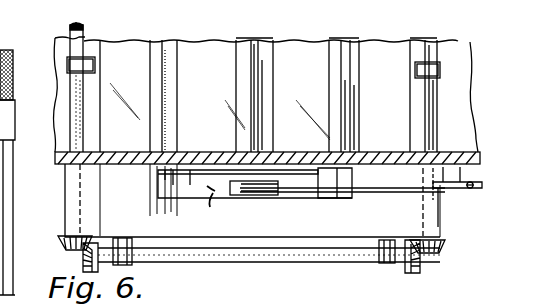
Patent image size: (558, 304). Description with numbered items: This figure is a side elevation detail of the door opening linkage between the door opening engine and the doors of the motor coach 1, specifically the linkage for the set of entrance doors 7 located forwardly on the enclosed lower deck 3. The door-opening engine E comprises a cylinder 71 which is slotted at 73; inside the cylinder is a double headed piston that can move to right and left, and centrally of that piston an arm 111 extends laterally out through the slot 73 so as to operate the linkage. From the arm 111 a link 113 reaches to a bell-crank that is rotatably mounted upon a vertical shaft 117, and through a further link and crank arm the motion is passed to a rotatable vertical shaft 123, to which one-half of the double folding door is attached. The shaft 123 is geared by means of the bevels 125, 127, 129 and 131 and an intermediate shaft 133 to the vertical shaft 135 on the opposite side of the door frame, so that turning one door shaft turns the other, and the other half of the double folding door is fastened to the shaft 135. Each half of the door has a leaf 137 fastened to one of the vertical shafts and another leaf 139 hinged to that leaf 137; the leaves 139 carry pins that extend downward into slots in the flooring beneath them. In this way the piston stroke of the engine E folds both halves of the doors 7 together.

The motor coach 1 is at (65, 108).
The lower deck 3 is at (125, 150).
The doors 7 is at (256, 62).
The cylinder 71 is at (304, 196).
The slot 73 is at (262, 196).
The arm 111 is at (236, 183).
The link 113 is at (371, 192).
The vertical shaft 117 is at (436, 192).
The rotatable vertical shaft 123 is at (425, 120).
The bevel 125 is at (432, 255).
The bevel 127 is at (412, 268).
The bevel 129 is at (100, 262).
The bevel 131 is at (58, 237).
The intermediate shaft 133 is at (305, 262).
The vertical shaft 135 is at (72, 28).
The leaf 137 is at (253, 99).
The leaf 139 is at (234, 95).
The door-opening engine E is at (220, 208).